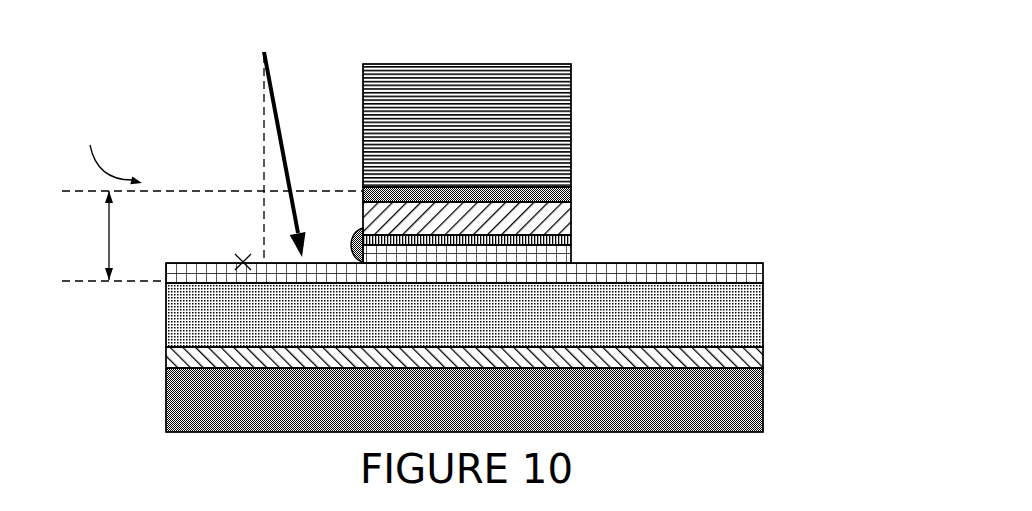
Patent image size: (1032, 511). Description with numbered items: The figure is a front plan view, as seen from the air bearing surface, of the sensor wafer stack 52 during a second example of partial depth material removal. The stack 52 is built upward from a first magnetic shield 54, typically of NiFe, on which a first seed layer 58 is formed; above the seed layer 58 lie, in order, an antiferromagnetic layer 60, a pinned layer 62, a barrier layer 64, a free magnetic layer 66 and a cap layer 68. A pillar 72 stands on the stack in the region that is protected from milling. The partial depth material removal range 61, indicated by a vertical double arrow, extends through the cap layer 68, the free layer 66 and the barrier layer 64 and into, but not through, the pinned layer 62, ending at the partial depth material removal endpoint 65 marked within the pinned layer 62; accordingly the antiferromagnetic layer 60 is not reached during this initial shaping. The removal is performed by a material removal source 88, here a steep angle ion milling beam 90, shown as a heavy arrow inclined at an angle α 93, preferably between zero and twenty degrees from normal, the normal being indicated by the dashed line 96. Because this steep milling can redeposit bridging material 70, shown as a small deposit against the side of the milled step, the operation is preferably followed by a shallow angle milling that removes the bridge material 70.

The sensor wafer stack 52 is at (116, 76).
The first magnetic shield 54 is at (167, 417).
The first seed layer 58 is at (167, 362).
The antiferromagnetic layer 60 is at (760, 301).
The partial depth material removal range 61 is at (109, 215).
The pinned layer 62 is at (763, 272).
The barrier layer 64 is at (571, 240).
The partial depth material removal endpoint 65 is at (240, 247).
The free magnetic layer 66 is at (571, 218).
The cap layer 68 is at (571, 193).
The bridging material 70 is at (350, 238).
The photoresist pillar 72 is at (571, 95).
The material removal source 88 is at (327, 140).
The steep angle ion milling beam 90 is at (283, 130).
The angle α 93 is at (286, 80).
The dashed line 96 is at (263, 161).